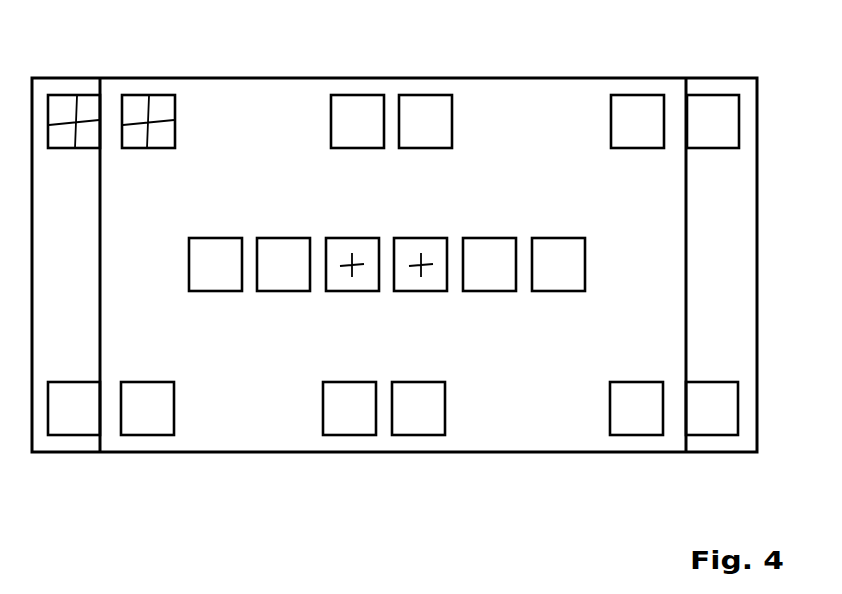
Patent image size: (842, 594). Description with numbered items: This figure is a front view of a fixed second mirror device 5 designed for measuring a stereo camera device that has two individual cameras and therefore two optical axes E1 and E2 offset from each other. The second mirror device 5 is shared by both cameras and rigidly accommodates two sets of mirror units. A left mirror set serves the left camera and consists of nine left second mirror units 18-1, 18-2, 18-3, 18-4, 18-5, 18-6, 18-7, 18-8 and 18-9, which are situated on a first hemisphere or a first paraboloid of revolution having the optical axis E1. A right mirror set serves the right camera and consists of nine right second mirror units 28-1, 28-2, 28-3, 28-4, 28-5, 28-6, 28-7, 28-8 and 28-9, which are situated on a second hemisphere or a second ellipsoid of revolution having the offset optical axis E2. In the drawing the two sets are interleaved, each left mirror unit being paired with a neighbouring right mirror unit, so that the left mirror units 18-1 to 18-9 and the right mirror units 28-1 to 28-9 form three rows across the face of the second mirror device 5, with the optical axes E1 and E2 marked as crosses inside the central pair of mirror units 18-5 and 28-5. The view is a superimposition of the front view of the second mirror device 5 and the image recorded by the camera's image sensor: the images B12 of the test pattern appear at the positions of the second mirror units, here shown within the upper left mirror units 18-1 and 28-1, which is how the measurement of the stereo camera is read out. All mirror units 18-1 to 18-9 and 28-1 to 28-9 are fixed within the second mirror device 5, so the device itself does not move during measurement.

The second mirror device 5 is at (522, 77).
The left second mirror unit 18-1 is at (81, 95).
The left second mirror unit 18-2 is at (355, 95).
The left second mirror unit 18-3 is at (636, 95).
The left second mirror unit 18-4 is at (215, 238).
The left second mirror unit 18-5 is at (351, 238).
The left second mirror unit 18-6 is at (490, 238).
The left second mirror unit 18-7 is at (73, 435).
The left second mirror unit 18-8 is at (350, 435).
The left second mirror unit 18-9 is at (637, 435).
The right second mirror unit 28-1 is at (153, 95).
The right second mirror unit 28-2 is at (425, 95).
The right second mirror unit 28-3 is at (710, 95).
The right second mirror unit 28-4 is at (283, 238).
The right second mirror unit 28-5 is at (420, 238).
The right second mirror unit 28-6 is at (558, 238).
The right second mirror unit 28-7 is at (147, 435).
The right second mirror unit 28-8 is at (417, 435).
The right second mirror unit 28-9 is at (711, 435).
The image of the test pattern B12 is at (70, 138).
The optical axis E1 is at (352, 267).
The optical axis E2 is at (421, 267).